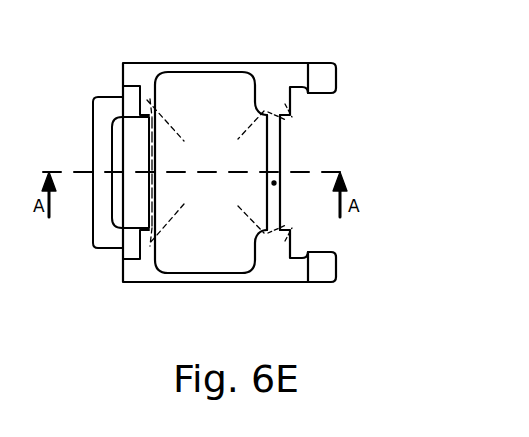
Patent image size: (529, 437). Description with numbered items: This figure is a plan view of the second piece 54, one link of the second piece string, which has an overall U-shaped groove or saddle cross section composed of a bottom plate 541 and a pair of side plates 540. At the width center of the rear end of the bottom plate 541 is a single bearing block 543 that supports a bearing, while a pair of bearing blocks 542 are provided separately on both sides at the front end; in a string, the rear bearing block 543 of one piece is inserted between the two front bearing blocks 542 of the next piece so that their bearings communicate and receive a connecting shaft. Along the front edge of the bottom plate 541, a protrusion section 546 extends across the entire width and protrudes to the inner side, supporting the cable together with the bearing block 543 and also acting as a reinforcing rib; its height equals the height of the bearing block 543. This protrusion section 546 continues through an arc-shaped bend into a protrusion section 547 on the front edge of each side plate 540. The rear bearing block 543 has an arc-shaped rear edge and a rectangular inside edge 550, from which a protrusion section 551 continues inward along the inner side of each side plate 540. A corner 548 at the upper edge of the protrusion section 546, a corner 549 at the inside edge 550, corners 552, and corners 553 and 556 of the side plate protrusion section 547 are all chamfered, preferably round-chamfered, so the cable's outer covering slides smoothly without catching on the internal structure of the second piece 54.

The second piece 54 is at (291, 37).
The side plate 540 is at (214, 63).
The bottom plate 541 is at (176, 90).
The bearing block 542 is at (336, 82).
The bearing block 543 is at (94, 118).
The protrusion section 546 is at (285, 147).
The protrusion section 547 is at (291, 107).
The corner 548 is at (276, 183).
The corner 549 is at (148, 155).
The inside edge 550 is at (136, 189).
The protrusion section 551 is at (144, 97).
The corner 552 is at (175, 172).
The corner 553 is at (243, 172).
The corner 556 is at (306, 121).